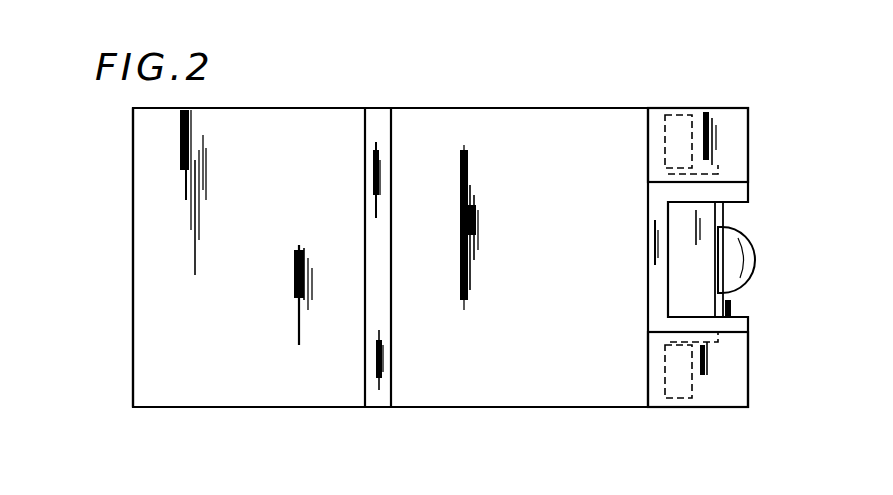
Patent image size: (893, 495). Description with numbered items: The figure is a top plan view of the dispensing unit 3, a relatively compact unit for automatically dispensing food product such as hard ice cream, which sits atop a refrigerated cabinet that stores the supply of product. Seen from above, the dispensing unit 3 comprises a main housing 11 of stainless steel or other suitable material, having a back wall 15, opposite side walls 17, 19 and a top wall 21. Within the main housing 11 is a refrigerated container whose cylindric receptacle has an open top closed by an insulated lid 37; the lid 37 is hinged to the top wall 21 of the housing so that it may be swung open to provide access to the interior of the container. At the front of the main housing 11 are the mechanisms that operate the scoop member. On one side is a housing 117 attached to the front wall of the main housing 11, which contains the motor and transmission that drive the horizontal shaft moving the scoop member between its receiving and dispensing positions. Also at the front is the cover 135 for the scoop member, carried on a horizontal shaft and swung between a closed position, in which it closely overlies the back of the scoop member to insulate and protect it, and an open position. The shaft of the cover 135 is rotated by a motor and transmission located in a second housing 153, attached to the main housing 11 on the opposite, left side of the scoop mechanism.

The dispensing unit 3 is at (600, 78).
The main housing 11 is at (320, 108).
The back wall 15 is at (133, 228).
The side wall 17 is at (418, 410).
The side wall 19 is at (458, 108).
The top wall 21 is at (287, 370).
The insulated lid 37 is at (545, 378).
The housing 117 is at (748, 161).
The cover 135 is at (754, 250).
The housing 153 is at (735, 372).